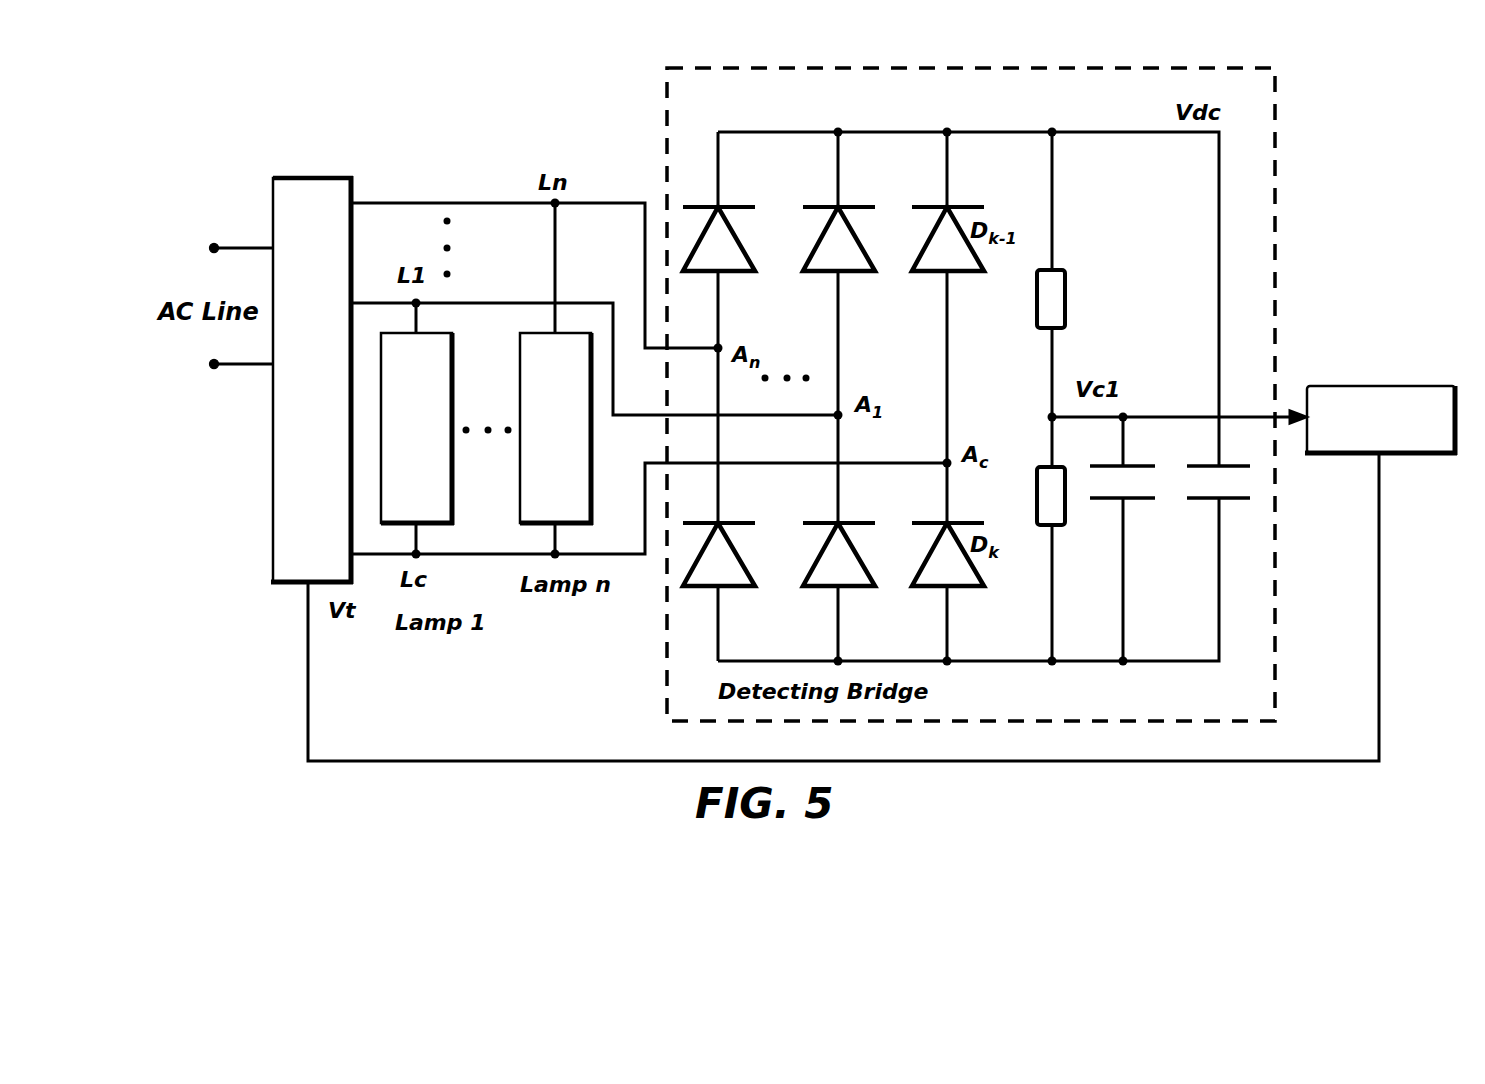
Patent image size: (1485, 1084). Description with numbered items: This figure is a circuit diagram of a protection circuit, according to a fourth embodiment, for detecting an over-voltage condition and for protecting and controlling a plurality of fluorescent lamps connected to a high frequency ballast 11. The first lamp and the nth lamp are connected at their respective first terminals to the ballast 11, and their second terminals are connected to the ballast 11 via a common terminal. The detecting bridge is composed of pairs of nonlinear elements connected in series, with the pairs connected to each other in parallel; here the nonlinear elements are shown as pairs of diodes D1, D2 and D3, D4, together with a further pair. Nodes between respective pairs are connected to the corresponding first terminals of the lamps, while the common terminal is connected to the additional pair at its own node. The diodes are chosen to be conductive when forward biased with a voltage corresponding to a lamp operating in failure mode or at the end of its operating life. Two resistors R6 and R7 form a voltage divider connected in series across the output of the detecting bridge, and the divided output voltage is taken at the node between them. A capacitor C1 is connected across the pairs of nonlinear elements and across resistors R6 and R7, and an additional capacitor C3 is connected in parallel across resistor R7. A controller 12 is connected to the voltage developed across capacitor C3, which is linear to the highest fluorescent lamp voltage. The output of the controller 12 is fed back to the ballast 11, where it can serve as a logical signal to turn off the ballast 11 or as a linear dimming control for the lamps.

The high frequency ballast 11 is at (252, 342).
The controller 12 is at (1381, 382).
The diode D1 is at (729, 239).
The diode D2 is at (729, 554).
The diode D3 is at (849, 239).
The diode D4 is at (849, 554).
The resistor R6 is at (1067, 299).
The resistor R7 is at (1065, 516).
The capacitor C1 is at (1219, 503).
The capacitor C3 is at (1123, 503).